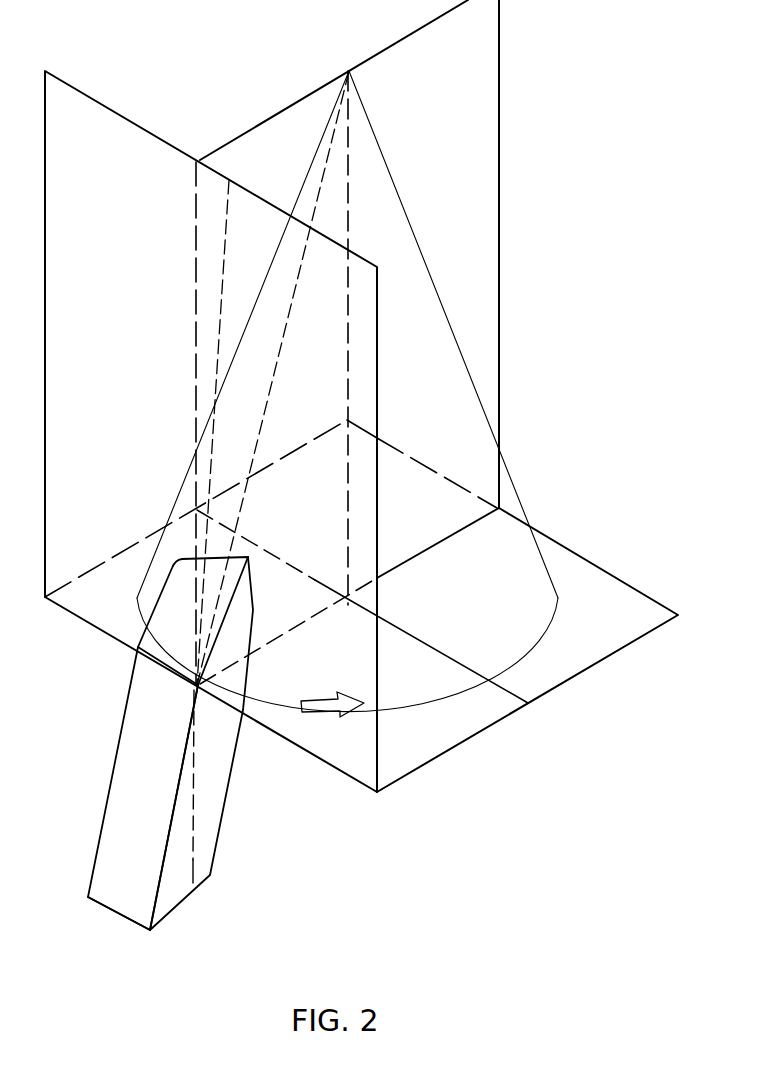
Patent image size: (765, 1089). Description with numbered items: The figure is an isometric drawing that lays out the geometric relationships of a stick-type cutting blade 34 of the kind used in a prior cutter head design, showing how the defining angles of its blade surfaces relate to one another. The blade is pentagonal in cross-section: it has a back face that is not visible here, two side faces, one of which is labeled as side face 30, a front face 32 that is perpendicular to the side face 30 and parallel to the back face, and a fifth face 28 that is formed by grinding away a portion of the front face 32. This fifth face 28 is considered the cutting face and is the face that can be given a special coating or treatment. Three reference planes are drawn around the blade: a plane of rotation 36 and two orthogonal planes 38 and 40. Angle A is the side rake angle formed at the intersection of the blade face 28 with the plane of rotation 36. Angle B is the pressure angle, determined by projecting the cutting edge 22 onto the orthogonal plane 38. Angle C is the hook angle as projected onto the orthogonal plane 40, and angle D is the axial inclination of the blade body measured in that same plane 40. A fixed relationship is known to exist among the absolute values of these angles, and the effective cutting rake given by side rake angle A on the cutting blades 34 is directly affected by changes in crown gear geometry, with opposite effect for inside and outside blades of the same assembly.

The cutting edge 22 is at (234, 604).
The fifth face 28 is at (210, 793).
The side face 30 is at (160, 847).
The front face 32 is at (158, 892).
The cutting blade 34 is at (208, 743).
The plane of rotation 36 is at (425, 705).
The orthogonal plane 38 is at (437, 122).
The orthogonal plane 40 is at (122, 248).
The side rake angle A is at (357, 614).
The pressure angle B is at (347, 318).
The hook angle C is at (241, 243).
The axial inclination D is at (209, 872).